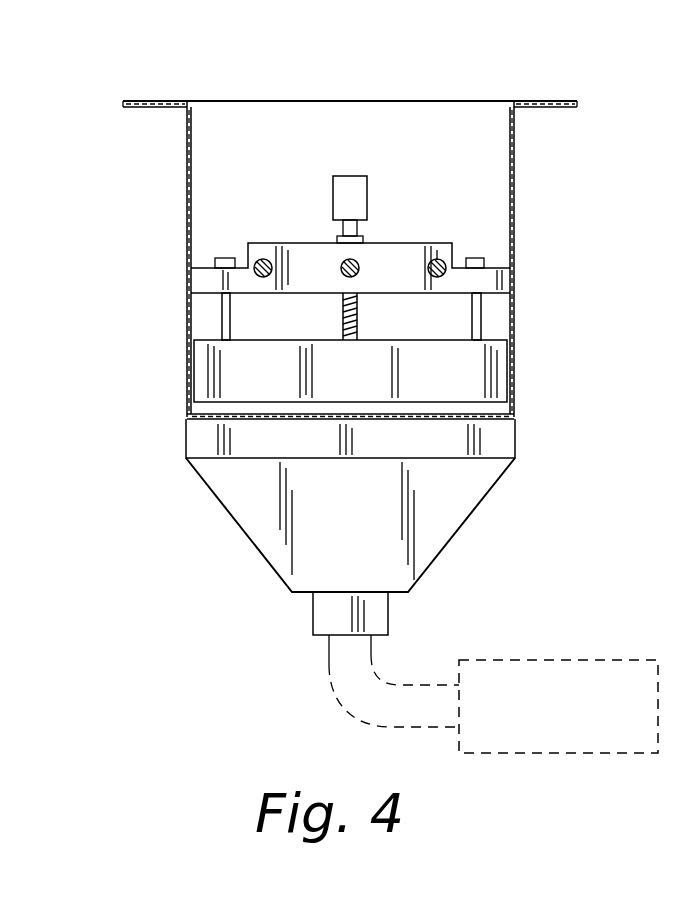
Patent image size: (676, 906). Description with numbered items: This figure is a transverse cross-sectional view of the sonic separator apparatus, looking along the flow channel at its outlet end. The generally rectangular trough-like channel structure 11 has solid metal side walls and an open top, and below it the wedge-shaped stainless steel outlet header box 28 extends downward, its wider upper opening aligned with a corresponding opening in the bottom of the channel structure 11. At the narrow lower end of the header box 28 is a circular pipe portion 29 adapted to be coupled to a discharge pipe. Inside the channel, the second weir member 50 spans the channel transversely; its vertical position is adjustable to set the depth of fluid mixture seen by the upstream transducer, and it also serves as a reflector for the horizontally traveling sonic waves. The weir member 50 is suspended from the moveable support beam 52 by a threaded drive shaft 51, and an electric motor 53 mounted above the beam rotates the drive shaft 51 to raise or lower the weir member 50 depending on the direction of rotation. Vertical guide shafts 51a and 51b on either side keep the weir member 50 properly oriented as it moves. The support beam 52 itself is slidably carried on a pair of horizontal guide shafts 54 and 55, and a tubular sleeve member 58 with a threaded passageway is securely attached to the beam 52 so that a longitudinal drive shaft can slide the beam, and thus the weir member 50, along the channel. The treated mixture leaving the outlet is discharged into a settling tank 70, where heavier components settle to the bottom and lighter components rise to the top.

The channel structure 11 is at (187, 188).
The outlet header box 28 is at (458, 531).
The circular pipe portion 29 is at (313, 616).
The second weir member 50 is at (505, 377).
The threaded drive shaft 51 is at (360, 328).
The vertical guide shaft 51a is at (220, 323).
The vertical guide shaft 51b is at (482, 313).
The moveable support beam 52 is at (400, 243).
The electric motor 53 is at (350, 176).
The horizontal guide shaft 54 is at (262, 259).
The horizontal guide shaft 55 is at (437, 259).
The tubular sleeve member 58 is at (339, 276).
The settling tank 70 is at (598, 660).